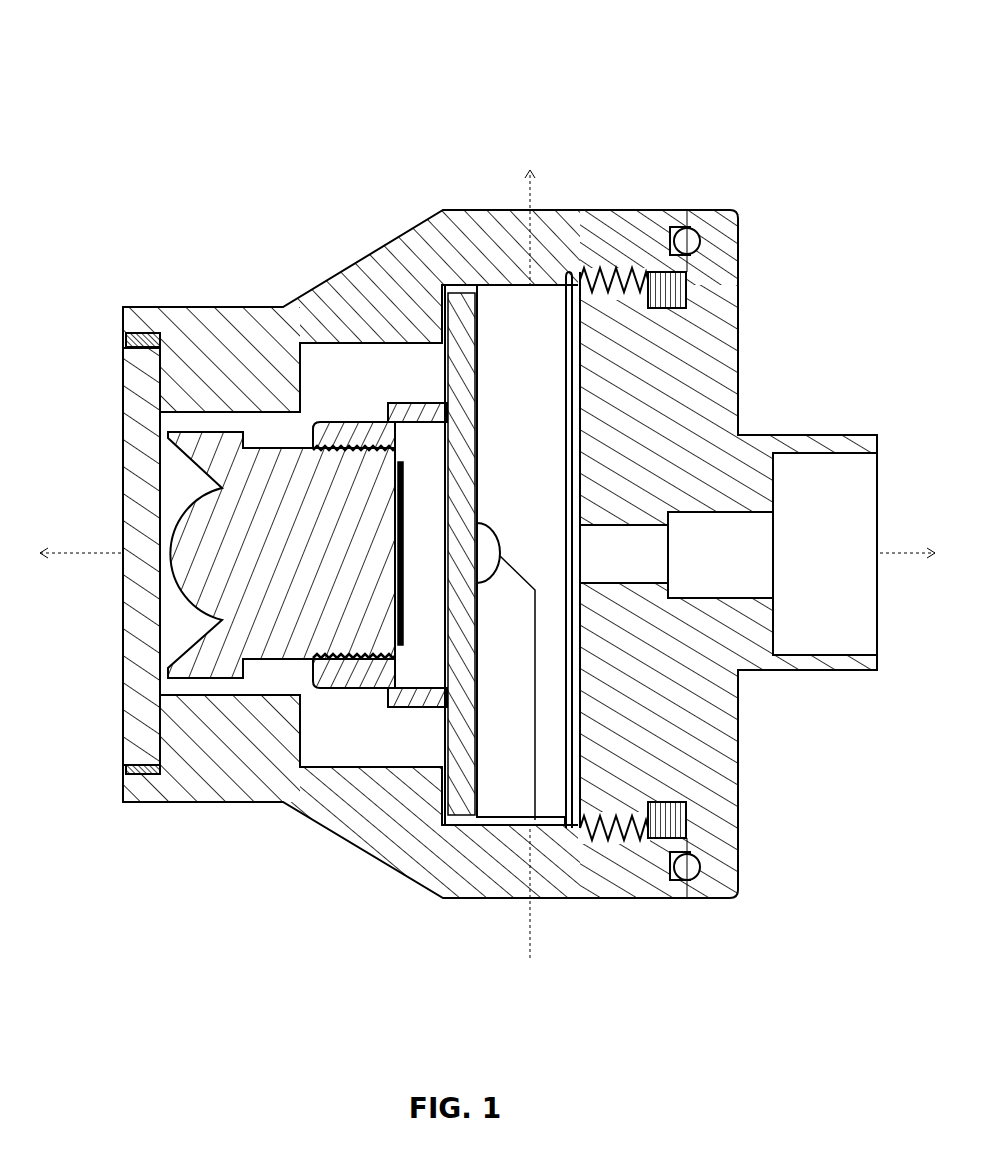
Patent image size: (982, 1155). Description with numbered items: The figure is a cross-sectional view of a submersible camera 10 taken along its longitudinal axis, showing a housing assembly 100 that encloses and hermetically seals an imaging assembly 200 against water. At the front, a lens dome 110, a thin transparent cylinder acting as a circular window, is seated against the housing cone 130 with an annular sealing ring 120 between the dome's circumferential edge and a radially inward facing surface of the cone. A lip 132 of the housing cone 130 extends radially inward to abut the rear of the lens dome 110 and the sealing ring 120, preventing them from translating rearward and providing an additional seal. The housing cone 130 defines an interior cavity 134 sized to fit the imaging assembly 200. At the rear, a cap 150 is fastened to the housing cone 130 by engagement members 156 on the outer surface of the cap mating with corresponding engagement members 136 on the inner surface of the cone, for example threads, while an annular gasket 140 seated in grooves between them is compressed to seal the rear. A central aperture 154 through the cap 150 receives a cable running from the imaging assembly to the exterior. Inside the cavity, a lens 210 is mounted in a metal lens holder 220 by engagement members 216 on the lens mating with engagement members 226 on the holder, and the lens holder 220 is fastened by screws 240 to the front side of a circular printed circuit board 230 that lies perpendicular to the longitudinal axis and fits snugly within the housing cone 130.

The submersible camera 10 is at (142, 55).
The housing assembly 100 is at (77, 112).
The lens dome 110 is at (142, 355).
The sealing ring 120 is at (152, 345).
The housing cone 130 is at (293, 300).
The lip 132 is at (168, 377).
The interior cavity 134 is at (377, 363).
The engagement member 136 is at (598, 272).
The gasket 140 is at (693, 237).
The cap 150 is at (837, 440).
The central aperture 154 is at (803, 475).
The engagement member 156 is at (605, 278).
The imaging assembly 200 is at (575, 980).
The lens 210 is at (267, 670).
The engagement member 216 is at (332, 662).
The lens holder 220 is at (359, 690).
The engagement member 226 is at (367, 655).
The printed circuit board 230 is at (461, 822).
The screw 240 is at (533, 826).